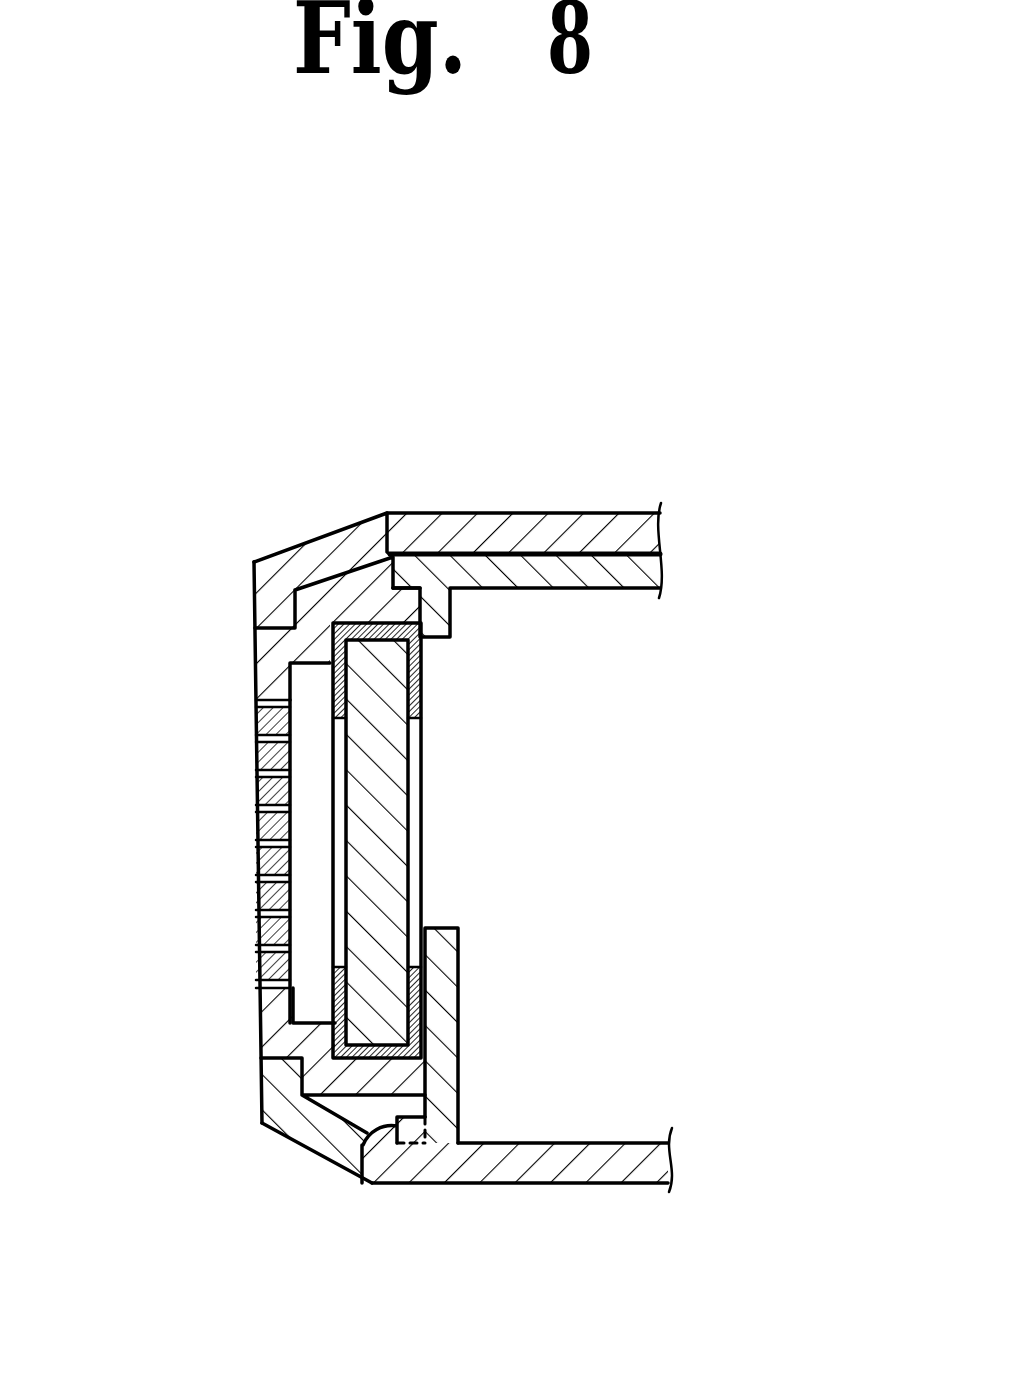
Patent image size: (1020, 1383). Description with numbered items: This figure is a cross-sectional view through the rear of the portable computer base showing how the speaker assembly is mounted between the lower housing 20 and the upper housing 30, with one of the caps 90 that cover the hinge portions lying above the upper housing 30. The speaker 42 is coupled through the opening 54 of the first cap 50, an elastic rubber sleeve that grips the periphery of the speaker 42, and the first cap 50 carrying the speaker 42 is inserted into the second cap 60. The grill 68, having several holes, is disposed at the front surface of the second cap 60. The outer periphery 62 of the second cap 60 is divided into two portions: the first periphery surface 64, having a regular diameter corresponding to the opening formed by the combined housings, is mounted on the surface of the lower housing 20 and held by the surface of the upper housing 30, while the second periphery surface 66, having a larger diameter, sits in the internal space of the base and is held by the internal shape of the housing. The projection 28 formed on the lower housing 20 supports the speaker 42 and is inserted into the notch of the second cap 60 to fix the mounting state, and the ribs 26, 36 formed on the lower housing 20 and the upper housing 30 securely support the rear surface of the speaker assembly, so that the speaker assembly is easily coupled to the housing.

The lower housing 20 is at (552, 1167).
The rib 26 is at (448, 1042).
The projection 28 is at (362, 1183).
The upper housing 30 is at (568, 578).
The rib 36 is at (428, 640).
The speaker 42 is at (373, 748).
The first cap 50 is at (420, 683).
The opening 54 is at (415, 835).
The second cap 60 is at (363, 748).
The outer periphery 62 is at (316, 748).
The first periphery surface 64 is at (270, 625).
The second periphery surface 66 is at (362, 600).
The grill 68 is at (257, 930).
The cap 90 is at (540, 530).